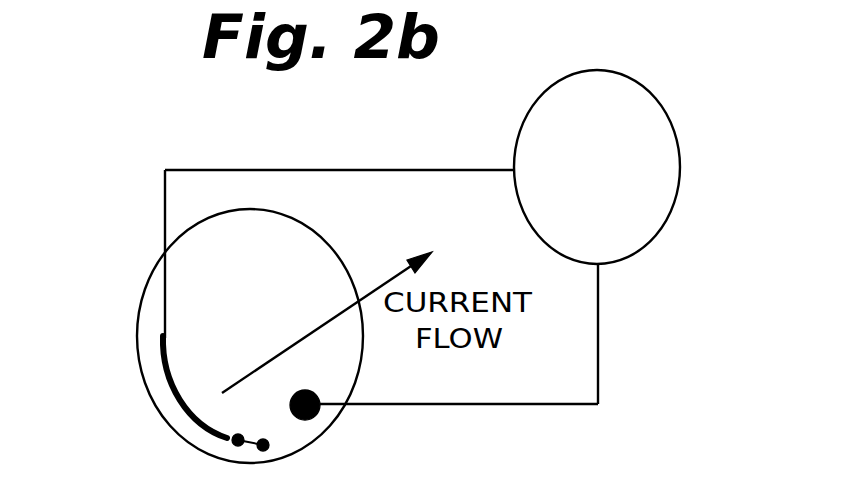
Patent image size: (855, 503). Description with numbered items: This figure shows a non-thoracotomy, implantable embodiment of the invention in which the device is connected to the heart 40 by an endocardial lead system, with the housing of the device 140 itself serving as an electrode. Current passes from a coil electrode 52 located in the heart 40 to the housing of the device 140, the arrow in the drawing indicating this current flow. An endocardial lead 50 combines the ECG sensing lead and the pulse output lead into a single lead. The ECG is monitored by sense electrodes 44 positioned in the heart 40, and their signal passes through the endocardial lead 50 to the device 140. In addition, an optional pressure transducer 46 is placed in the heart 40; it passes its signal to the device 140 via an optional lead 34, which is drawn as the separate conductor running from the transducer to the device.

The optional lead 34 is at (598, 348).
The heart 40 is at (167, 242).
The sense electrodes 44 is at (250, 446).
The pressure transducer 46 is at (305, 420).
The endocardial lead 50 is at (303, 170).
The coil electrode 52 is at (177, 393).
The device 140 is at (540, 95).